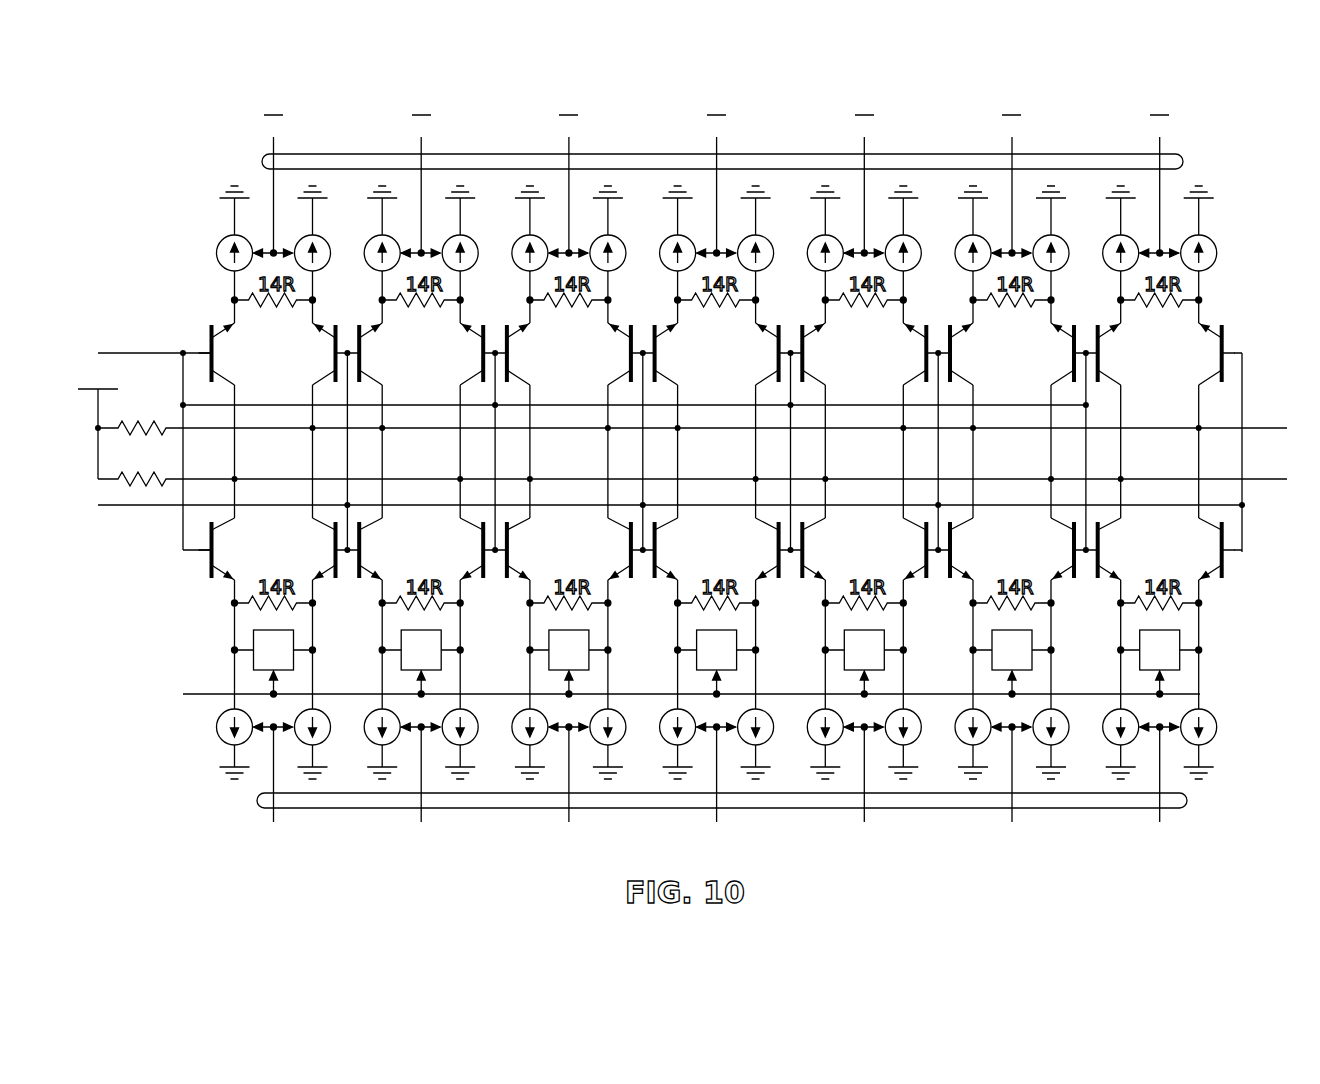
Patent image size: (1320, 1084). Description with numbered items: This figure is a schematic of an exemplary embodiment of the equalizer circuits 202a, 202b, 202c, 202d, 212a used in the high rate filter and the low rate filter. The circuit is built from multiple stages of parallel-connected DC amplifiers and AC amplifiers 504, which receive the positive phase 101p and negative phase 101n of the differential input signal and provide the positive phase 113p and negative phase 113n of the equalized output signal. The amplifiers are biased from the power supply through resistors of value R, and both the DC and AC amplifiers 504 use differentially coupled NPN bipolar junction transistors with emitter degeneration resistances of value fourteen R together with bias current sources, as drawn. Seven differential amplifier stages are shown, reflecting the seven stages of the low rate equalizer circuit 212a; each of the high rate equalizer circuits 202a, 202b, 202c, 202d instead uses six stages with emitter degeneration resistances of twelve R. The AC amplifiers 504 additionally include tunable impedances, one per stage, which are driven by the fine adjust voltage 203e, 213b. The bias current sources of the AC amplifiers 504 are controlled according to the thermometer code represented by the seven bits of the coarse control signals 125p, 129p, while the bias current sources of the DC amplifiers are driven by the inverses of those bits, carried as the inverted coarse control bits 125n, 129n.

The inverted coarse control signal bits 125n is at (657, 155).
The inverted coarse control signal bits 129n is at (262, 161).
The coarse control signal bits 125p is at (658, 808).
The coarse control signal bits 129p is at (257, 800).
The positive phase of differential input signal 101p is at (153, 335).
The negative phase of differential input signal 101n is at (660, 527).
The positive phase of output signal 113p is at (1262, 428).
The negative phase of output signal 113n is at (1250, 481).
The AC amplifier 504 is at (204, 611).
The fine adjust voltage 203e is at (659, 675).
The fine adjustment voltage line 213b is at (200, 693).
The high rate equalizer circuit 202a is at (698, 512).
The high rate equalizer circuit 202b is at (698, 512).
The high rate equalizer circuit 202c is at (698, 512).
The high rate equalizer circuit 202d is at (698, 512).
The low rate equalizer circuit 212a is at (1262, 852).